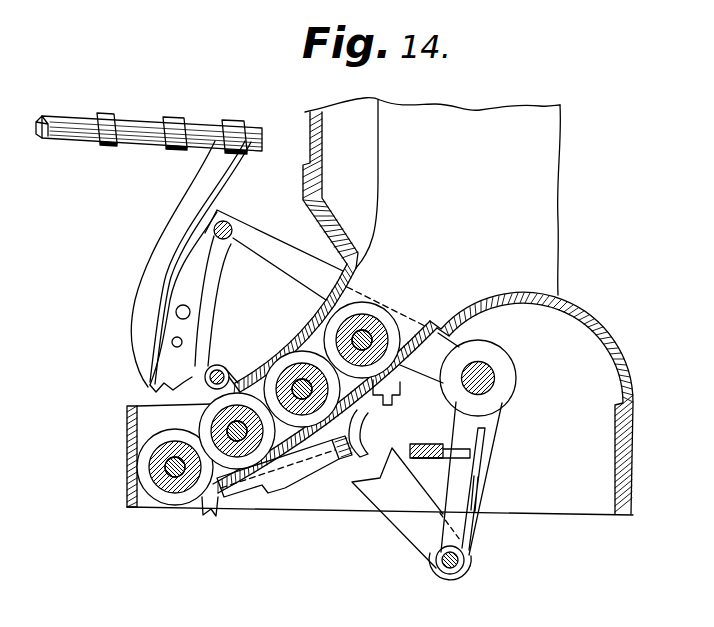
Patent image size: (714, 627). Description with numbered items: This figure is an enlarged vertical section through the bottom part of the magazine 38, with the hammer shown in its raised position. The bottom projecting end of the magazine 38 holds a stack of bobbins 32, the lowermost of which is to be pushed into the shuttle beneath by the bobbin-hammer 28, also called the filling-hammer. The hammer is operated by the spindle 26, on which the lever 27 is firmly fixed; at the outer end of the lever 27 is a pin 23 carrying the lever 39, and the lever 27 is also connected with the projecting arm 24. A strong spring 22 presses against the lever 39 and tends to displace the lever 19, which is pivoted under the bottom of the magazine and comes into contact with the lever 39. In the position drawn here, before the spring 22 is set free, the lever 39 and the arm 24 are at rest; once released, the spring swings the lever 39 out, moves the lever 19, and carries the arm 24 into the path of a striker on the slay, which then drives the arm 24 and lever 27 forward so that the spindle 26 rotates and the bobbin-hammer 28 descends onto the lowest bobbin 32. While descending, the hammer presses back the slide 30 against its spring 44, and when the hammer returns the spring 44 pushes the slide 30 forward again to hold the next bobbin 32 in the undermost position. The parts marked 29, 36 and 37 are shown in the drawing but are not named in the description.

The lever 19 is at (418, 443).
The strong spring 22 is at (482, 492).
The pin 23 is at (447, 566).
The projecting arm 24 is at (397, 518).
The spindle 26 is at (490, 373).
The lever 27 is at (495, 418).
The bobbin-hammer 28 is at (253, 233).
The slide bar 29 is at (270, 483).
The slide 30 is at (208, 514).
The bobbin 32 is at (224, 412).
The cartridge clip 36 is at (140, 140).
The guide strip 37 is at (153, 252).
The magazine 38 is at (318, 158).
The lever 39 is at (457, 542).
The spring 44 is at (370, 410).